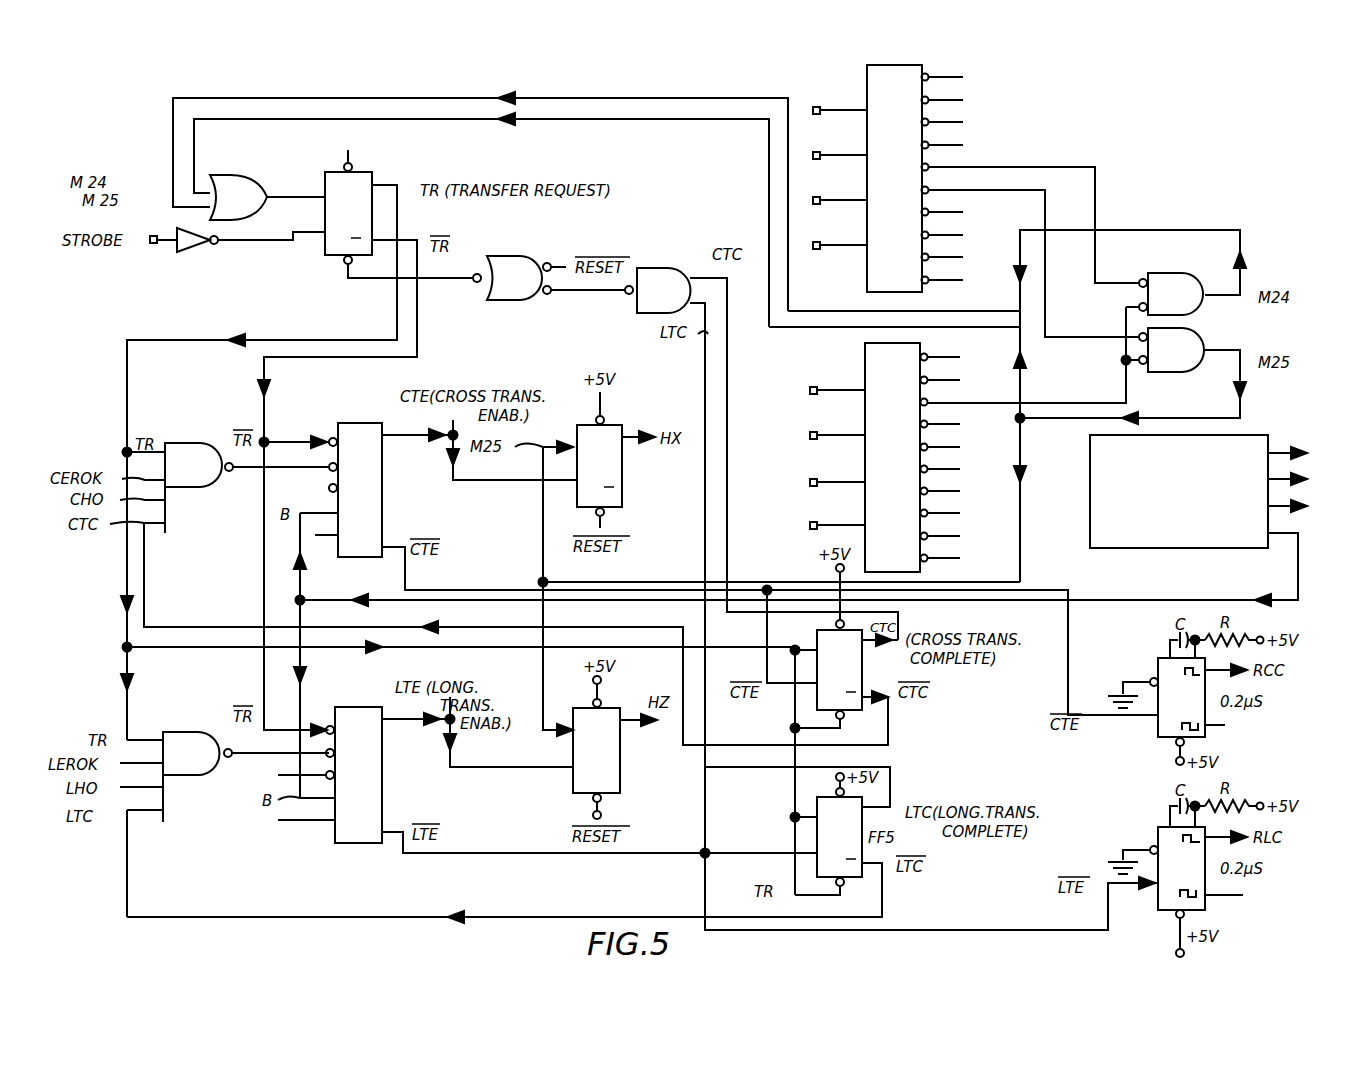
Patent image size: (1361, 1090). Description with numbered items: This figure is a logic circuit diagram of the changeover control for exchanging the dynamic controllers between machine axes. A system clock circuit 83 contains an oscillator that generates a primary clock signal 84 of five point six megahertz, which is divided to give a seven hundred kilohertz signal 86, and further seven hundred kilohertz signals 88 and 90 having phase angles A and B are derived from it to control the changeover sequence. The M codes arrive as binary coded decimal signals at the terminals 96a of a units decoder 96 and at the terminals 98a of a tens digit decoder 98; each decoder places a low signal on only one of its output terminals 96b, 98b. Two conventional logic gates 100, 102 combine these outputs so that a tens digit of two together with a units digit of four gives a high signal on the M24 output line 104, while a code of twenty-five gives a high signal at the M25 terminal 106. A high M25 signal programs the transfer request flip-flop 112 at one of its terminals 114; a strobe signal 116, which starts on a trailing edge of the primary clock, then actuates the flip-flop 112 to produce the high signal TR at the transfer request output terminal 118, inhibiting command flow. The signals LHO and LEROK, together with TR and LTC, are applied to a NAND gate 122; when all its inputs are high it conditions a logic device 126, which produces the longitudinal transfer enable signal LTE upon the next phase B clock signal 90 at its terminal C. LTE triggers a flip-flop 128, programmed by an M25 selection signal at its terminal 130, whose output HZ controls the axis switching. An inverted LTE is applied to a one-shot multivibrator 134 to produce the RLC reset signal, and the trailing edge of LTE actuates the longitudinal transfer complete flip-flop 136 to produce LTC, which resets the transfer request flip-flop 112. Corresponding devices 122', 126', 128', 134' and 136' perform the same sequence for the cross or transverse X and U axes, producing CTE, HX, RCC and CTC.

The system clock circuit 83 is at (1188, 548).
The primary clock signal 84 is at (1302, 454).
The 700 KHz signal 86 is at (1302, 480).
The phase A clock signal 88 is at (1302, 507).
The phase B clock signal 90 is at (1301, 534).
The units decoder 96 is at (867, 274).
The input terminals of units decoder 96a is at (845, 80).
The output terminals of units decoder 96b is at (1000, 138).
The tens digit decoder 98 is at (865, 450).
The input terminals of tens digit decoder 98a is at (795, 412).
The output terminals of tens digit decoder 98b is at (950, 352).
The logic gate 100 is at (1175, 278).
The logic gate 102 is at (1172, 374).
The M24 output line 104 is at (1232, 300).
The M25 terminal 106 is at (1242, 346).
The transfer request flip-flop 112 is at (330, 262).
The programming terminal of transfer request flip-flop 114 is at (318, 195).
The strobe signal 116 is at (155, 250).
The transfer request output terminal 118 is at (380, 185).
The NAND gate 122 is at (224, 807).
The NAND gate for cross axes 122' is at (219, 467).
The logic device 126 is at (547, 777).
The logic device for cross axes 126' is at (438, 472).
The flip-flop 128 is at (629, 747).
The flip-flop for cross axes 128' is at (624, 457).
The programming terminal of flip-flop 128 130 is at (565, 740).
The one-shot multivibrator 134 is at (1184, 877).
The one-shot multivibrator for cross axes 134' is at (1183, 697).
The longitudinal transfer complete flip-flop 136 is at (508, 845).
The cross transfer complete flip-flop 136' is at (835, 756).